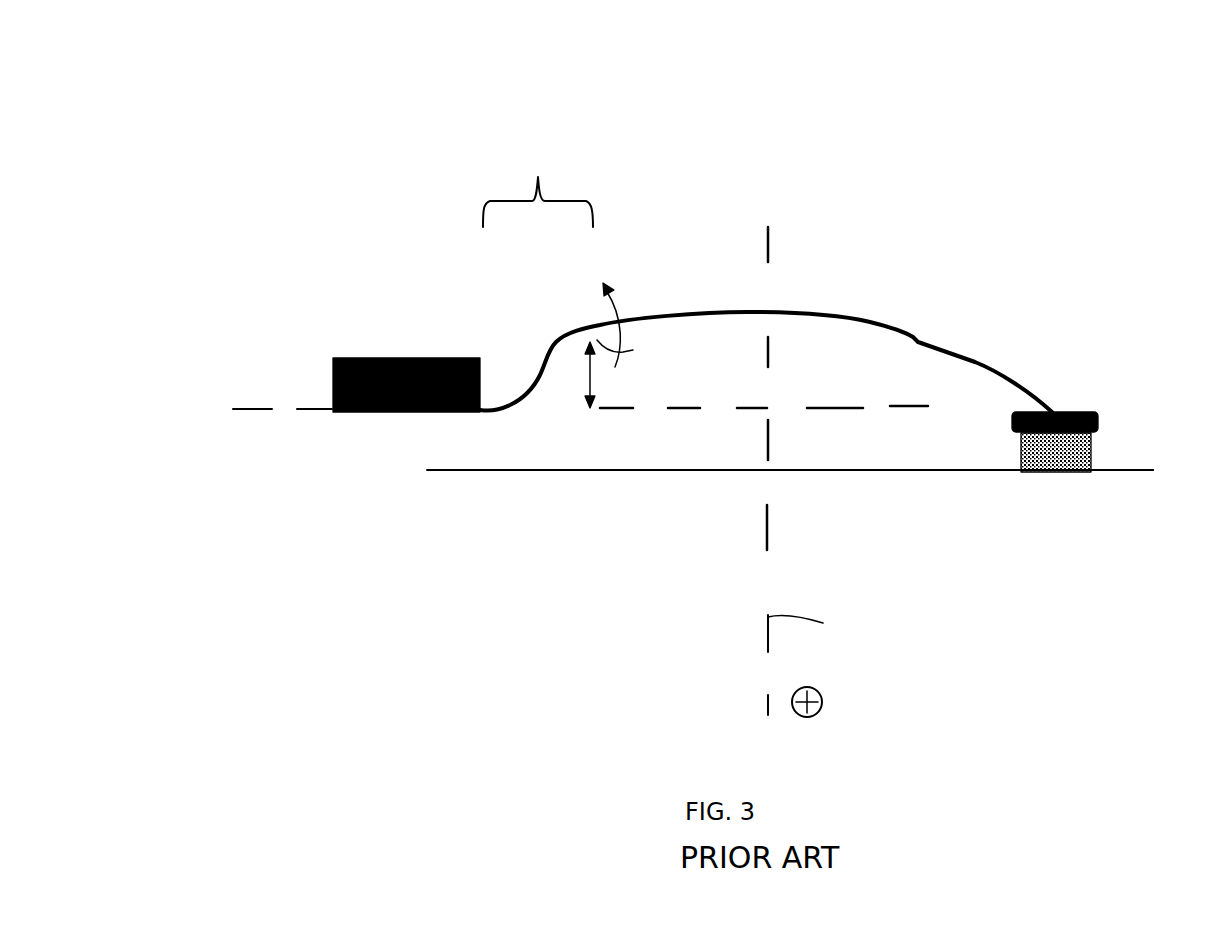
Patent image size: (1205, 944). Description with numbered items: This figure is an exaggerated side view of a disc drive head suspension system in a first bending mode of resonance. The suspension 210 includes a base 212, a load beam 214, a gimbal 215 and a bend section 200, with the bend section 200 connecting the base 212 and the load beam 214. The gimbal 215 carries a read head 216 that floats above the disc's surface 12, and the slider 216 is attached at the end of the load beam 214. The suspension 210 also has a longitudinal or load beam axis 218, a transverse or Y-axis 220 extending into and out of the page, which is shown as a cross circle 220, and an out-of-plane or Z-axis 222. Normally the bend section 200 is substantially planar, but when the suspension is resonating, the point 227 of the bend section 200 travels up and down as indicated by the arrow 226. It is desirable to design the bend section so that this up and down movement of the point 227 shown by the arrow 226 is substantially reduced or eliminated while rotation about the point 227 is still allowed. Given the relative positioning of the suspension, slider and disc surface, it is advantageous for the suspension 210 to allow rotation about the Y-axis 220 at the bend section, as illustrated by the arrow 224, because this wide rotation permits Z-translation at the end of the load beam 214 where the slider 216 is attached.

The suspension 210 is at (1022, 110).
The bend section 200 is at (538, 182).
The base 212 is at (378, 358).
The load beam 214 is at (823, 310).
The gimbal 215 is at (1067, 404).
The read head 216 is at (1092, 457).
The longitudinal axis 218 is at (1026, 506).
The disc surface 12 is at (605, 475).
The transverse axis 220 is at (823, 698).
The Z-axis 222 is at (821, 632).
The arrow 224 is at (629, 320).
The arrow 226 is at (578, 390).
The point 227 is at (637, 351).